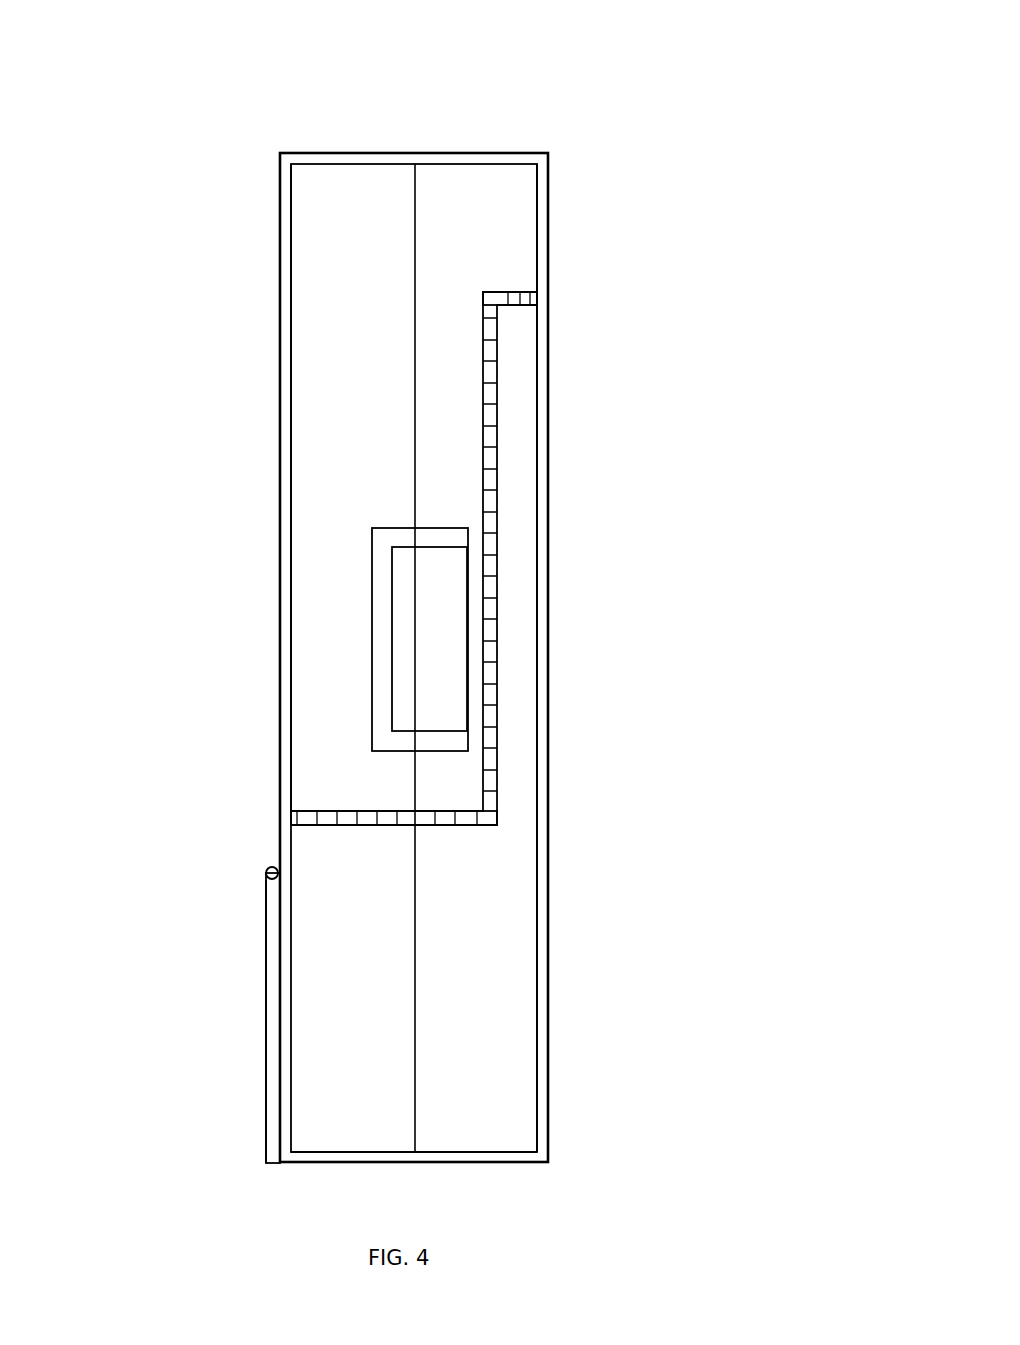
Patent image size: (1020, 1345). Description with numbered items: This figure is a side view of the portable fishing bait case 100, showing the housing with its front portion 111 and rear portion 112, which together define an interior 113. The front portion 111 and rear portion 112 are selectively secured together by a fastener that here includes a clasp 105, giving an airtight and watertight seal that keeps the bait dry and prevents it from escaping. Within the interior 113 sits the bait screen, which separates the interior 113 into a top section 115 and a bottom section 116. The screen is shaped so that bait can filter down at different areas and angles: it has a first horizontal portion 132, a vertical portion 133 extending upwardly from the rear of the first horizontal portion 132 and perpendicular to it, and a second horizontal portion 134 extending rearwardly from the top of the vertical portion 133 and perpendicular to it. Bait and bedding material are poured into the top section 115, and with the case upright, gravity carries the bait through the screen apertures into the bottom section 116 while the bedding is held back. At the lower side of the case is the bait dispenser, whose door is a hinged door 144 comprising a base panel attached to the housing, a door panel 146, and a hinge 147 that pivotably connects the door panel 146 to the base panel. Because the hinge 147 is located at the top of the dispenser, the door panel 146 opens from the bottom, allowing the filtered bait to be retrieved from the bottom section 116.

The portable fishing bait case 100 is at (673, 85).
The clasp 105 is at (398, 598).
The front portion 111 is at (322, 302).
The rear portion 112 is at (510, 217).
The interior 113 is at (338, 377).
The top section 115 is at (372, 228).
The bottom section 116 is at (508, 966).
The first horizontal portion 132 is at (332, 808).
The vertical portion 133 is at (492, 469).
The second horizontal portion 134 is at (518, 291).
The hinged door 144 is at (254, 925).
The door panel 146 is at (270, 1068).
The hinge 147 is at (267, 868).